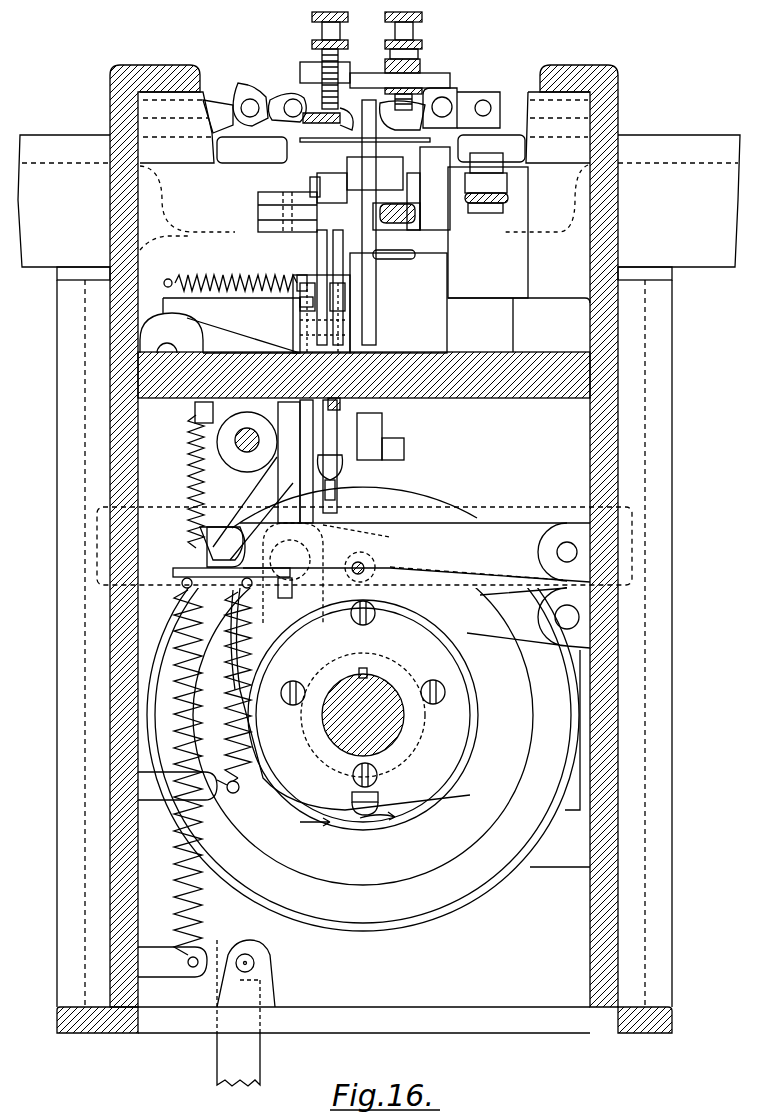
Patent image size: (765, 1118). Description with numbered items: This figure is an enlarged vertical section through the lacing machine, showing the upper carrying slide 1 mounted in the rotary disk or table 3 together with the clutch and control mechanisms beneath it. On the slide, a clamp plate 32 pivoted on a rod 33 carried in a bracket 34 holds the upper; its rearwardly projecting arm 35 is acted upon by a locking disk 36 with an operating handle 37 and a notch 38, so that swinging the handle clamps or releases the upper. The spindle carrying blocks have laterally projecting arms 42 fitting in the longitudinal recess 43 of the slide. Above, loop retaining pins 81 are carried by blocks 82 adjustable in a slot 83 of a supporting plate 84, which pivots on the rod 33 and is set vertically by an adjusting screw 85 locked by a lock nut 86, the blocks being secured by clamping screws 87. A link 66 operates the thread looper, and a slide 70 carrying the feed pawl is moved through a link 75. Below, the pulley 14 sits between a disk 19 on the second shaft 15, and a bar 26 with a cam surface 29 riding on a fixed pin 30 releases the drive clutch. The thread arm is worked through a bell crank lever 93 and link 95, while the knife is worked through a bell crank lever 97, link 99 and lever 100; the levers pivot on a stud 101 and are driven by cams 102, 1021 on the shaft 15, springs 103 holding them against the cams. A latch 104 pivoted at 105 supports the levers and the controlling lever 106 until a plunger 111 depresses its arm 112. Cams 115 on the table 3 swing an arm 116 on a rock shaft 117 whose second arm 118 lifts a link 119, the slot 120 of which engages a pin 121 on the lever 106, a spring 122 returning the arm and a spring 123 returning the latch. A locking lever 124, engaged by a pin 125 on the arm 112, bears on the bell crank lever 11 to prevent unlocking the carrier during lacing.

The upper carrying slide 1 is at (214, 172).
The rotary disk or table 3 is at (665, 148).
The bell crank lever 11 is at (390, 492).
The pulley 14 is at (478, 908).
The second shaft 15 is at (405, 735).
The disk 19 is at (463, 853).
The bar 26 is at (215, 1055).
The cam surface 29 is at (258, 915).
The fixed pin 30 is at (252, 966).
The clamp plate 32 is at (402, 115).
The pivot rod 33 is at (445, 107).
The bracket 34 is at (535, 147).
The rearwardly projecting arm 35 is at (283, 95).
The locking disk 36 is at (245, 88).
The operating handle 37 is at (220, 100).
The notch 38 is at (257, 96).
The laterally projecting arms 42 is at (272, 198).
The longitudinal recess 43 is at (268, 212).
The link 66 is at (508, 197).
The slide 70 is at (392, 255).
The link 75 is at (420, 235).
The loop retaining pins 81 is at (383, 75).
The blocks 82 is at (430, 97).
The slot 83 is at (445, 85).
The supporting plate 84 is at (450, 70).
The adjusting screw 85 is at (415, 30).
The lock nut 86 is at (425, 45).
The clamping screws 87 is at (420, 60).
The bell crank lever 93 is at (340, 280).
The link 95 is at (292, 360).
The bell crank lever 97 is at (320, 250).
The link 99 is at (372, 375).
The lever 100 is at (515, 530).
The stud 101 is at (567, 552).
The cam 102 is at (277, 767).
The cam 1021 is at (310, 770).
The springs 103 is at (178, 875).
The latch 104 is at (190, 545).
The pivot 105 is at (235, 438).
The controlling lever 106 is at (513, 627).
The plunger 111 is at (340, 413).
The arm 112 is at (317, 443).
The cams 115 is at (148, 200).
The arm 116 is at (148, 294).
The rock shaft 117 is at (167, 342).
The second arm 118 is at (222, 342).
The link 119 is at (290, 483).
The slot 120 is at (293, 598).
The pin 121 is at (235, 546).
The spring 122 is at (200, 275).
The spring 123 is at (195, 410).
The locking lever 124 is at (345, 478).
The pin 125 is at (385, 445).